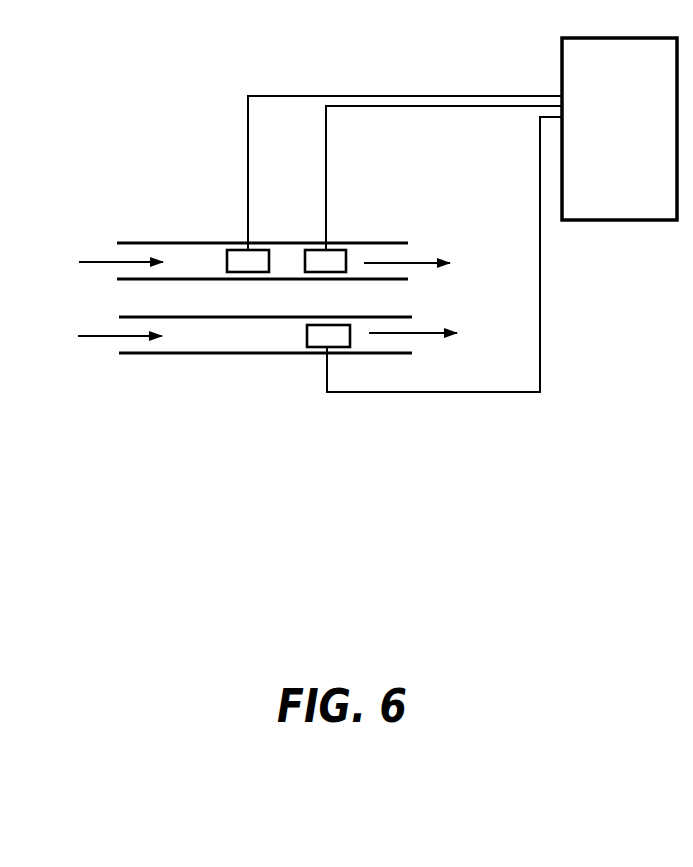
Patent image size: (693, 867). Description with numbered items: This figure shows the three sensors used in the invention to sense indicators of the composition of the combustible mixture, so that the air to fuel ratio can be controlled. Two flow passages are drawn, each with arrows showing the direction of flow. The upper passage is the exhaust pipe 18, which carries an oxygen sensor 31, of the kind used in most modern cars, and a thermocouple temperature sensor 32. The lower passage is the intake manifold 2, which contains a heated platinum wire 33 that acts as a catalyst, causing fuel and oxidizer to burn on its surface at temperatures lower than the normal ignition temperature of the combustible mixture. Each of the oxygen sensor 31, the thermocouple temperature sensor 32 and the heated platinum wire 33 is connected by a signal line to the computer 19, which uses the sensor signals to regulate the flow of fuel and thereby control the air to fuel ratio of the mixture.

The exhaust pipe 18 is at (140, 238).
The intake manifold 2 is at (197, 355).
The oxygen sensor 31 is at (223, 257).
The thermocouple temperature sensor 32 is at (352, 255).
The heated platinum wire 33 is at (300, 340).
The computer 19 is at (462, 215).